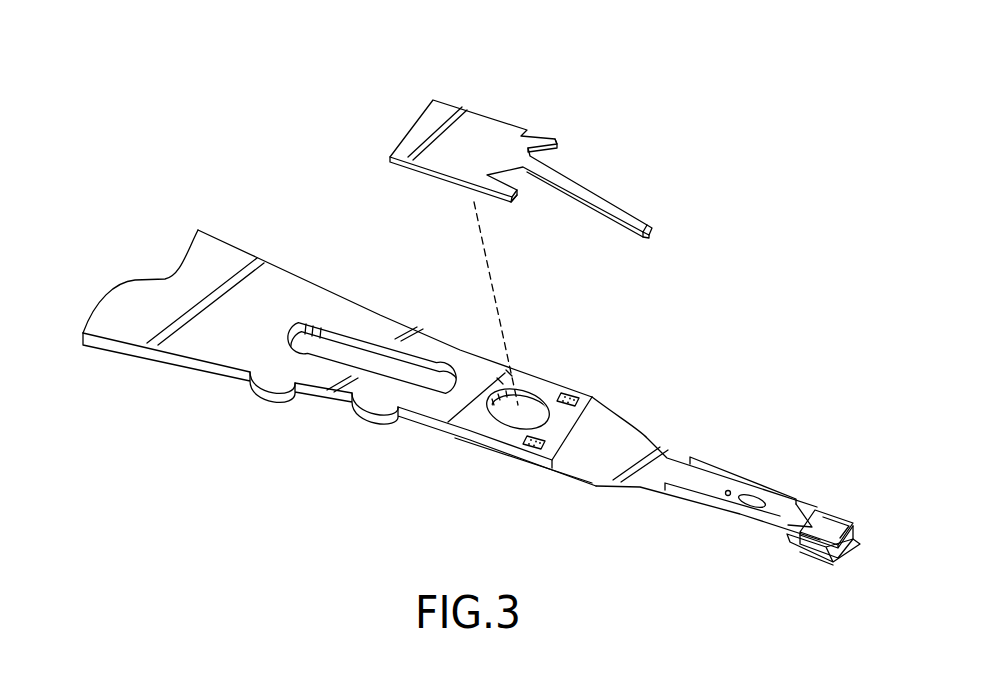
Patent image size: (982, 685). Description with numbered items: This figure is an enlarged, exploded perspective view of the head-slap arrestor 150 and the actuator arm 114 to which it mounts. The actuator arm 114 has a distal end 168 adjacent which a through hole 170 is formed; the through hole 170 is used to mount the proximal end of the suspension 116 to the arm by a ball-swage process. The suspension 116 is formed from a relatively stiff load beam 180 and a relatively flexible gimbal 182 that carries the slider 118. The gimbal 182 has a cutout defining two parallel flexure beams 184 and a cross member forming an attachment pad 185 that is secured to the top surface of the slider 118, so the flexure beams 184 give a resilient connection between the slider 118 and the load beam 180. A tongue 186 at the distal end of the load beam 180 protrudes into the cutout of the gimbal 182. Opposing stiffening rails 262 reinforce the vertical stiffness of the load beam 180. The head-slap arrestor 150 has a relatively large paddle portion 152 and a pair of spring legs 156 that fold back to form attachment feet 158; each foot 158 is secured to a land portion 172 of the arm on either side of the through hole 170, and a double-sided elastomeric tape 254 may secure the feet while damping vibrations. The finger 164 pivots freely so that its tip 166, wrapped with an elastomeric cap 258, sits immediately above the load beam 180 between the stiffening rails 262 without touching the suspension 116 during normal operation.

The actuator arm 114 is at (378, 354).
The suspension 116 is at (755, 514).
The slider 118 is at (832, 542).
The head-slap arrestor 150 is at (524, 150).
The paddle portion 152 is at (443, 103).
The spring legs 156 is at (533, 133).
The attachment feet 158 is at (494, 201).
The finger 164 is at (598, 198).
The tip 166 is at (651, 224).
The elastomeric cap 258 is at (655, 234).
The distal end 168 is at (581, 417).
The through hole 170 is at (530, 395).
The land portion 172 is at (491, 433).
The load beam 180 is at (642, 442).
The gimbal 182 is at (858, 530).
The flexure beams 184 is at (838, 516).
The attachment pad 185 is at (848, 545).
The tongue 186 is at (815, 528).
The double-sided elastomeric tape 254 is at (537, 451).
The stiffening rails 262 is at (728, 470).